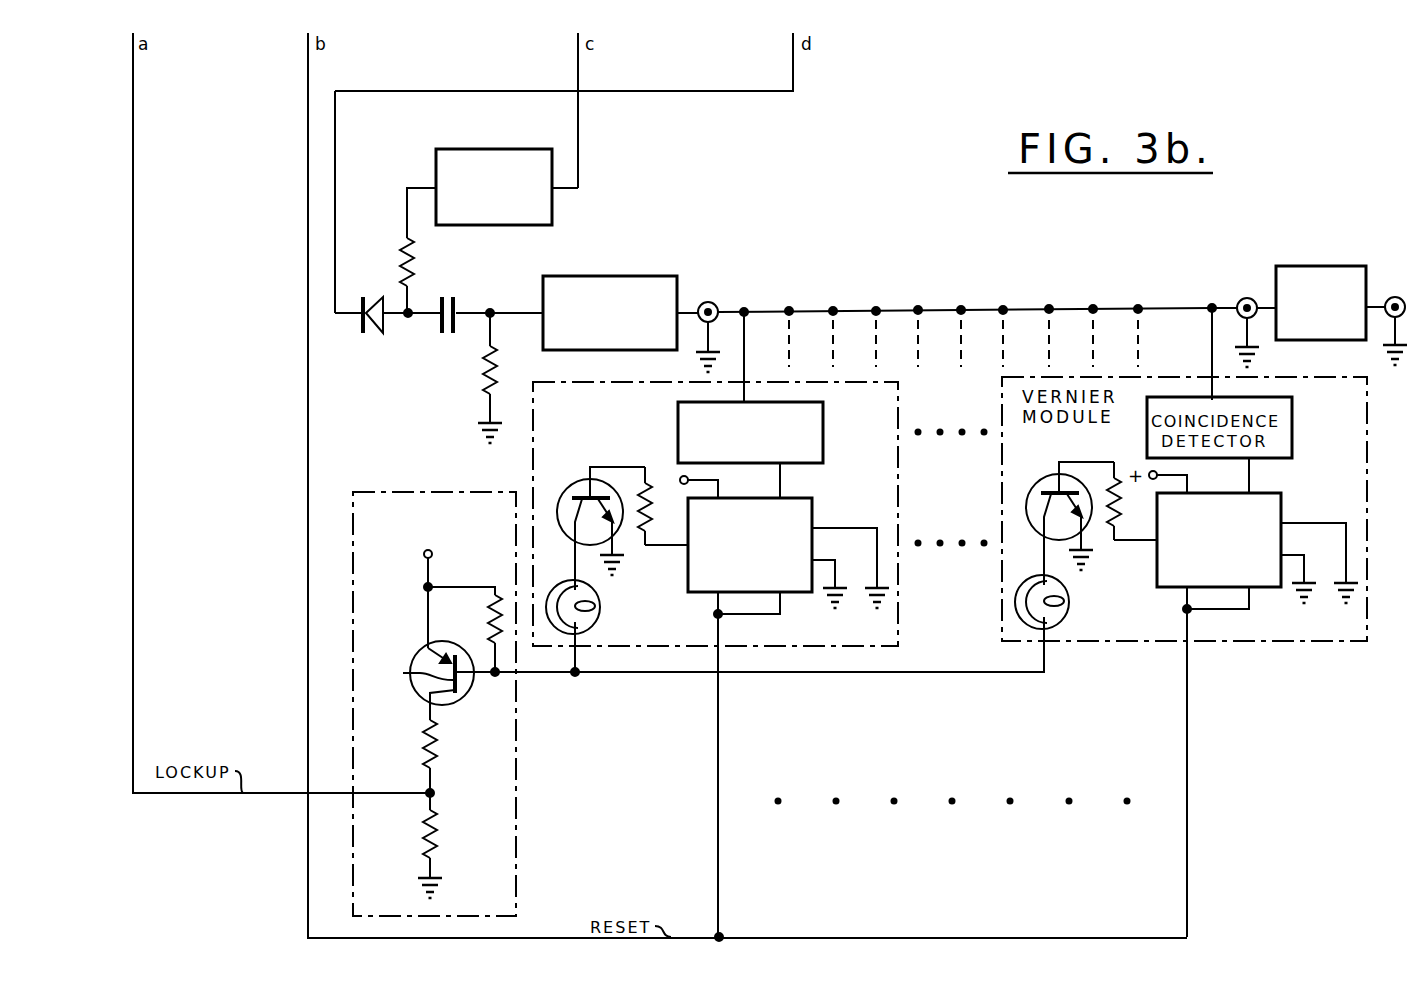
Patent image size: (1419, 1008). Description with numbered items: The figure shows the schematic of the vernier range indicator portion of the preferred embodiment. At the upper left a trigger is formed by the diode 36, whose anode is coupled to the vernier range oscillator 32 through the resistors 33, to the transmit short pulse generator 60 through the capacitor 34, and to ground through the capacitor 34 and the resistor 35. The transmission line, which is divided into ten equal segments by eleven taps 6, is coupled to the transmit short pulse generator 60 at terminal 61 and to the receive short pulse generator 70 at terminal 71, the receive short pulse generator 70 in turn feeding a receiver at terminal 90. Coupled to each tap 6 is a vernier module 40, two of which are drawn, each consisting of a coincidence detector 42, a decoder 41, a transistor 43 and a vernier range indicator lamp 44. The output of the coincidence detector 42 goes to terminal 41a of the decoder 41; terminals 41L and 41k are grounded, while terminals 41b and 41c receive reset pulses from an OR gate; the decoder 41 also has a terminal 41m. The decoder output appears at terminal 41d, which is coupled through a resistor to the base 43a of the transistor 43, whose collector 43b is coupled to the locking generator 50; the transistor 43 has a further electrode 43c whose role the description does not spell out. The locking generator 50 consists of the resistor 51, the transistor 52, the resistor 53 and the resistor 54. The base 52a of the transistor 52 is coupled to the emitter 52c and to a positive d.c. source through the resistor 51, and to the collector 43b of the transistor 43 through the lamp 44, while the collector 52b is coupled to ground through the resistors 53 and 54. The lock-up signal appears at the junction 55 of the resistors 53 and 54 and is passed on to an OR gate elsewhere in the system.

The taps 6 is at (967, 324).
The vernier range oscillator 32 is at (490, 149).
The resistors 33 is at (404, 251).
The capacitor 34 is at (453, 297).
The resistor 35 is at (482, 389).
The diode 36 is at (363, 335).
The vernier module 40 is at (533, 460).
The decoder 41 is at (818, 516).
The terminal of decoder 41a is at (771, 494).
The terminal of decoder 41b is at (714, 594).
The terminal of decoder 41c is at (757, 592).
The output terminal of decoder 41d is at (687, 547).
The terminal of decoder 41k is at (806, 580).
The terminal of decoder 41L is at (829, 566).
The decoder supply terminal 41m is at (713, 503).
The coincidence detector 42 is at (823, 435).
The transistor 43 is at (572, 475).
The base of transistor 43a is at (596, 497).
The collector of transistor 43b is at (574, 510).
The transistor collector 43c is at (614, 523).
The vernier range indicator 44 is at (600, 605).
The locking generator 50 is at (365, 492).
The resistor 51 is at (496, 603).
The transistor 52 is at (408, 647).
The base of transistor 52a is at (462, 691).
The collector of transistor 52b is at (410, 674).
The emitter of transistor 52c is at (442, 652).
The resistor 53 is at (420, 762).
The resistor 54 is at (420, 845).
The junction 55 is at (440, 793).
The transmit short pulse generator 60 is at (664, 276).
The terminal 61 is at (708, 301).
The receive short pulse generator 70 is at (1368, 268).
The terminal 71 is at (1247, 298).
The terminal 90 is at (1395, 297).